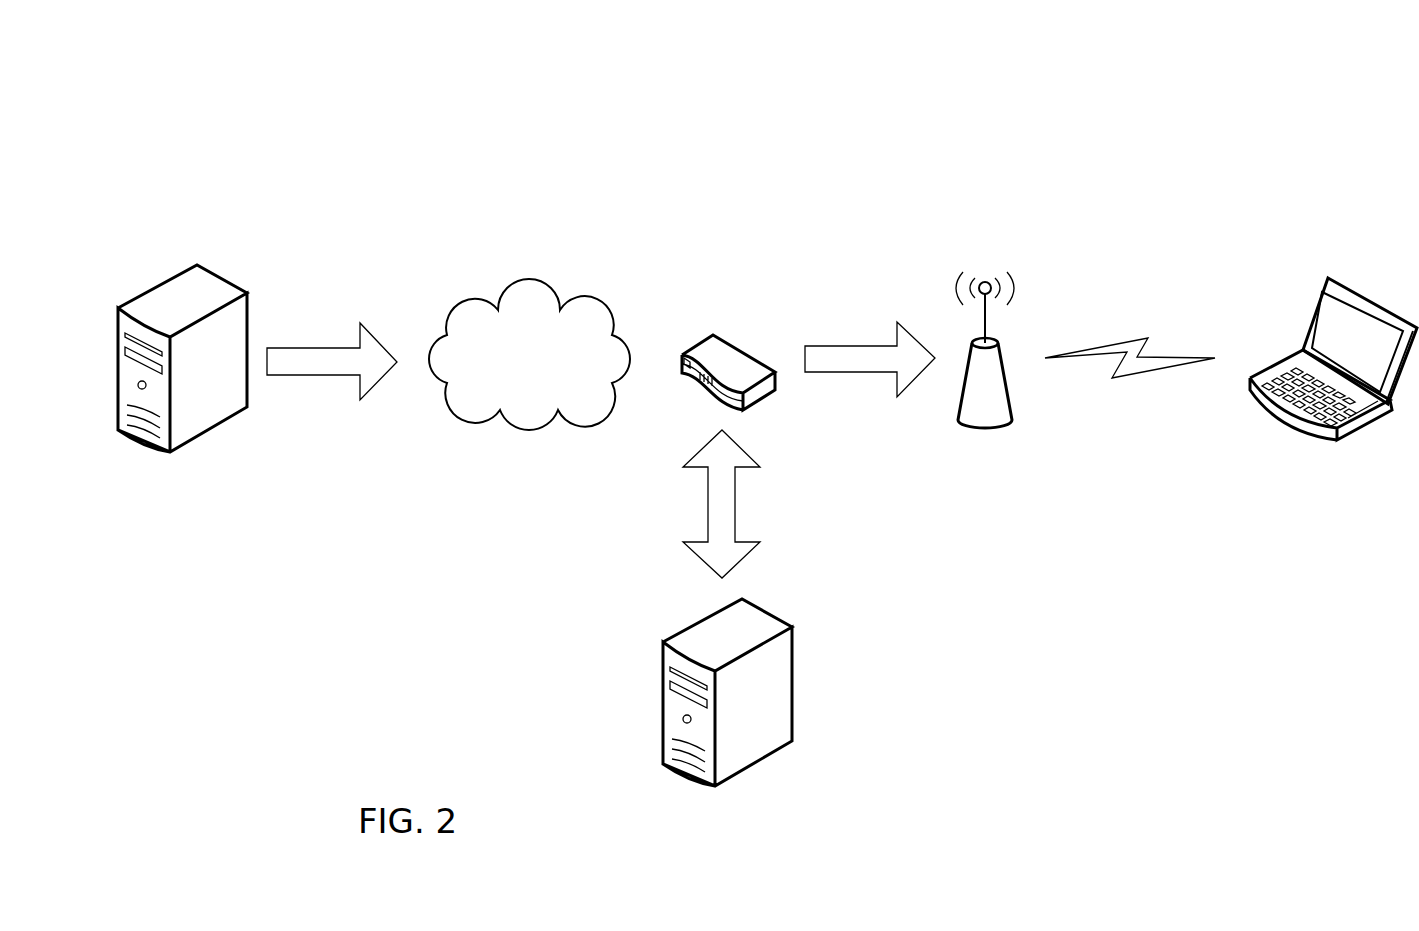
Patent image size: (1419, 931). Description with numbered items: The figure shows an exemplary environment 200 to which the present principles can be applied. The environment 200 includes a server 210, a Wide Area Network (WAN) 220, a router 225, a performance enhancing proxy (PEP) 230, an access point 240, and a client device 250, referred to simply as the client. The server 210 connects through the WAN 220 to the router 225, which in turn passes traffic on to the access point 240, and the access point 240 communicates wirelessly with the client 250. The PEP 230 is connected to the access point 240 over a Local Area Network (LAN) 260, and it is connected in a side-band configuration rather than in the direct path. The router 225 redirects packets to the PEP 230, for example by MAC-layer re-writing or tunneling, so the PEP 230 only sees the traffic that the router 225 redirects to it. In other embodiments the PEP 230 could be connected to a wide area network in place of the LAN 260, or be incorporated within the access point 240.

The environment 200 is at (863, 63).
The server 210 is at (197, 265).
The Wide Area Network (WAN) 220 is at (530, 280).
The router 225 is at (710, 335).
The performance enhancing proxy (PEP) 230 is at (797, 680).
The access point 240 is at (985, 430).
The client device 250 is at (1328, 279).
The Local Area Network (LAN) 260 is at (881, 250).